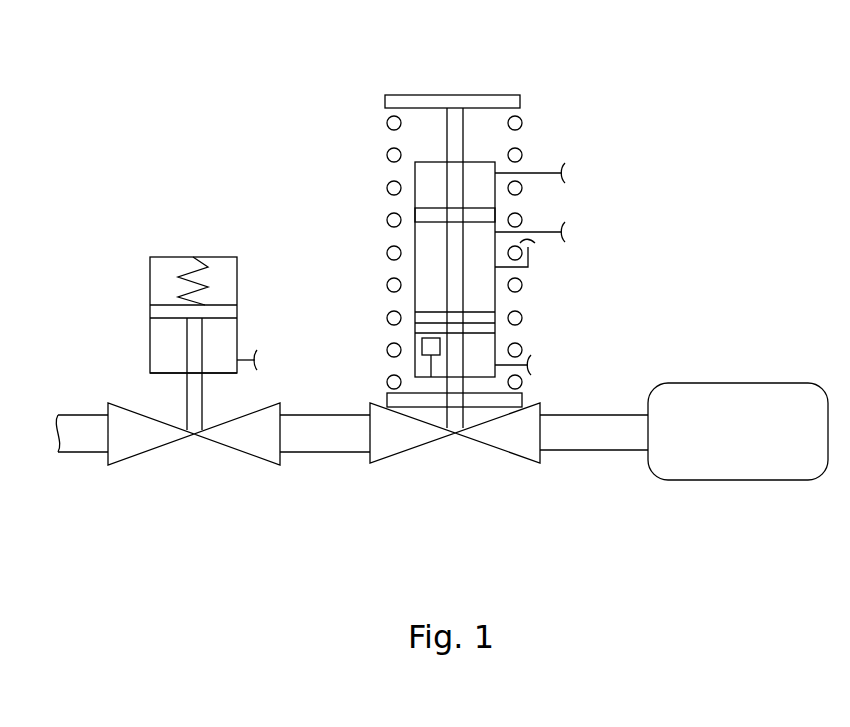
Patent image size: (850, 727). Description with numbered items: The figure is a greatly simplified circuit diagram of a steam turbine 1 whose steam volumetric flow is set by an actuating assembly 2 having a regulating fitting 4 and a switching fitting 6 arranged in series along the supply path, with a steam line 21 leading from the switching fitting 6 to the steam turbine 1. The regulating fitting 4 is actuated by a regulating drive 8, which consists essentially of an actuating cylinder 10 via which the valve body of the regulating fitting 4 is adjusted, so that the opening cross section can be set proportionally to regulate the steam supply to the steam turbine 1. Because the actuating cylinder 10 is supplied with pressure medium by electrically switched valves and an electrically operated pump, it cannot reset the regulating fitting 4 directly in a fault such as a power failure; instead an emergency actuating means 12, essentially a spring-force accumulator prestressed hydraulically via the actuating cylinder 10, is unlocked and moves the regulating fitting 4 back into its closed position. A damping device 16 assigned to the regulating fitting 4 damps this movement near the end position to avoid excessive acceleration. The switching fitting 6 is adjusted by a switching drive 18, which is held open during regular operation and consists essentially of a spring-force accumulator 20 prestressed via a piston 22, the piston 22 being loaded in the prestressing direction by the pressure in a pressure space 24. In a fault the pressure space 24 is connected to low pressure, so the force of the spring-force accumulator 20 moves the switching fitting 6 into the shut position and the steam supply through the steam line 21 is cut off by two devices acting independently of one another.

The steam turbine 1 is at (743, 444).
The actuating assembly 2 is at (302, 134).
The regulating fitting 4 is at (513, 437).
The switching fitting 6 is at (252, 437).
The regulating drive 8 is at (482, 305).
The actuating cylinder 10 is at (413, 186).
The emergency actuating means 12 is at (387, 221).
The damping device 16 is at (422, 346).
The switching drive 18 is at (243, 258).
The spring-force accumulator 20 is at (193, 257).
The steam line 21 is at (595, 443).
The piston 22 is at (230, 312).
The pressure space 24 is at (237, 345).